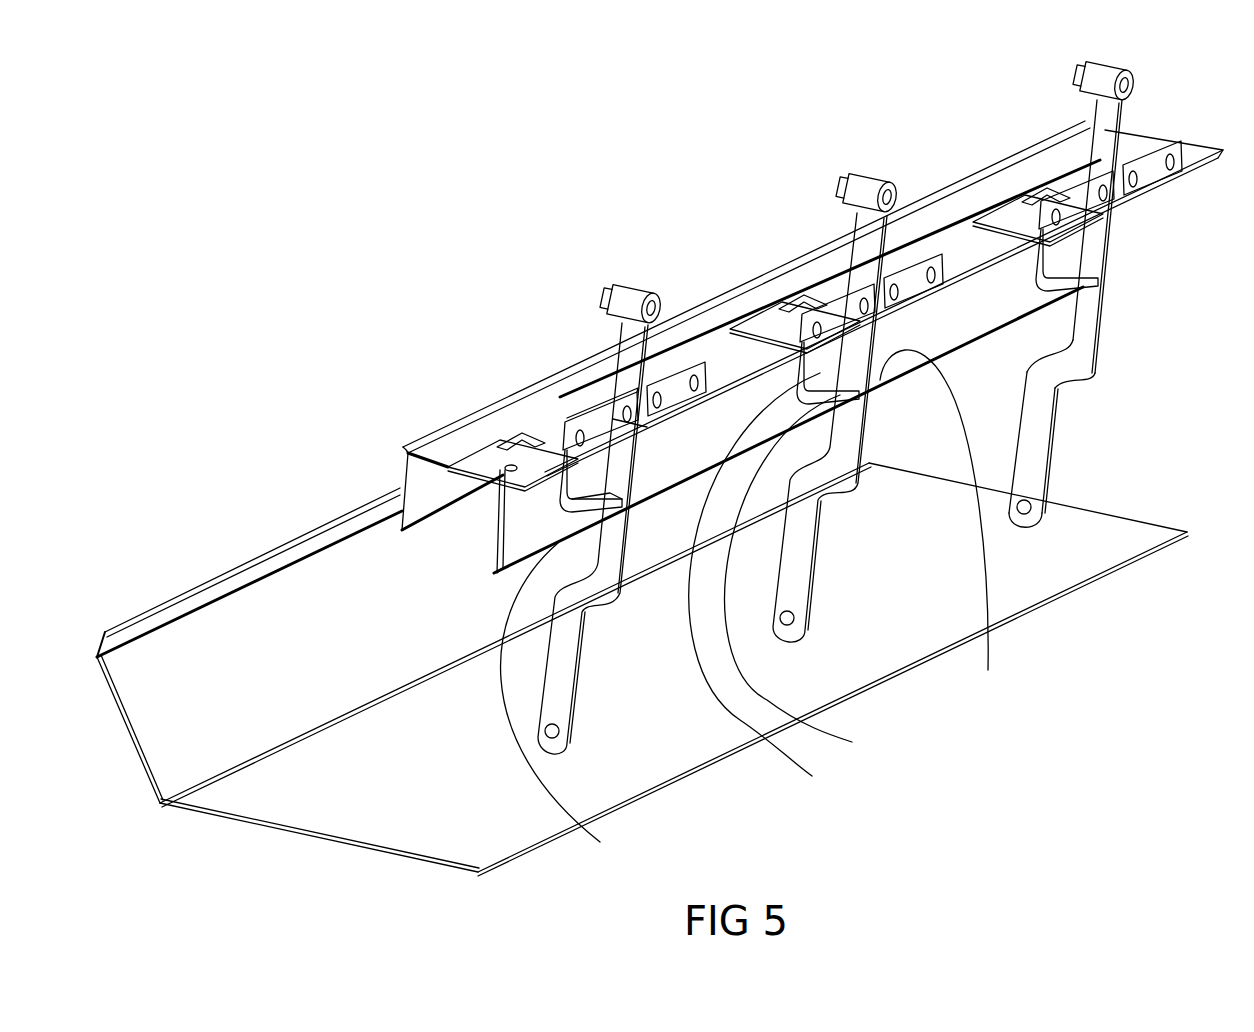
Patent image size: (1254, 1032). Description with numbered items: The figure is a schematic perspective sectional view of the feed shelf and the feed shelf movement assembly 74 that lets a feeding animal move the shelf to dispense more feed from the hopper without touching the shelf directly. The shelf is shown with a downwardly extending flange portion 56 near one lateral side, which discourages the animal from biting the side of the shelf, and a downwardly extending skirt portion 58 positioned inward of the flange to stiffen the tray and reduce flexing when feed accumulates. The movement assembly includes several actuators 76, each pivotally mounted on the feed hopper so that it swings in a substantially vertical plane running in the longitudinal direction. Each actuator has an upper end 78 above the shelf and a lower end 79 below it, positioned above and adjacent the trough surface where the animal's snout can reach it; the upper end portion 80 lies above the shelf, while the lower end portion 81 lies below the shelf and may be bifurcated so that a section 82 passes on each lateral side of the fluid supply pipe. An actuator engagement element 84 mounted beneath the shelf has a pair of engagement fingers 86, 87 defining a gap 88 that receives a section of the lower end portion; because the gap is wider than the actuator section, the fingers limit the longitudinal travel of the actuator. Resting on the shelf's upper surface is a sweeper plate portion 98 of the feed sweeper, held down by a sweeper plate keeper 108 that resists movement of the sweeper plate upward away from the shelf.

The flange portion 56 is at (410, 477).
The skirt portion 58 is at (530, 525).
The feed shelf movement assembly 74 is at (673, 444).
The actuator 76 is at (1087, 269).
The upper end 78 is at (1110, 58).
The lower end 79 is at (1040, 512).
The upper end portion 80 is at (1100, 112).
The lower end portion 81 is at (1030, 440).
The section of the lower end portion 82 is at (1028, 420).
The actuator engagement element 84 is at (767, 583).
The engagement finger 86 is at (802, 576).
The engagement finger 87 is at (944, 523).
The gap 88 is at (567, 700).
The sweeper plate portion 98 is at (560, 444).
The sweeper plate keeper 108 is at (605, 432).